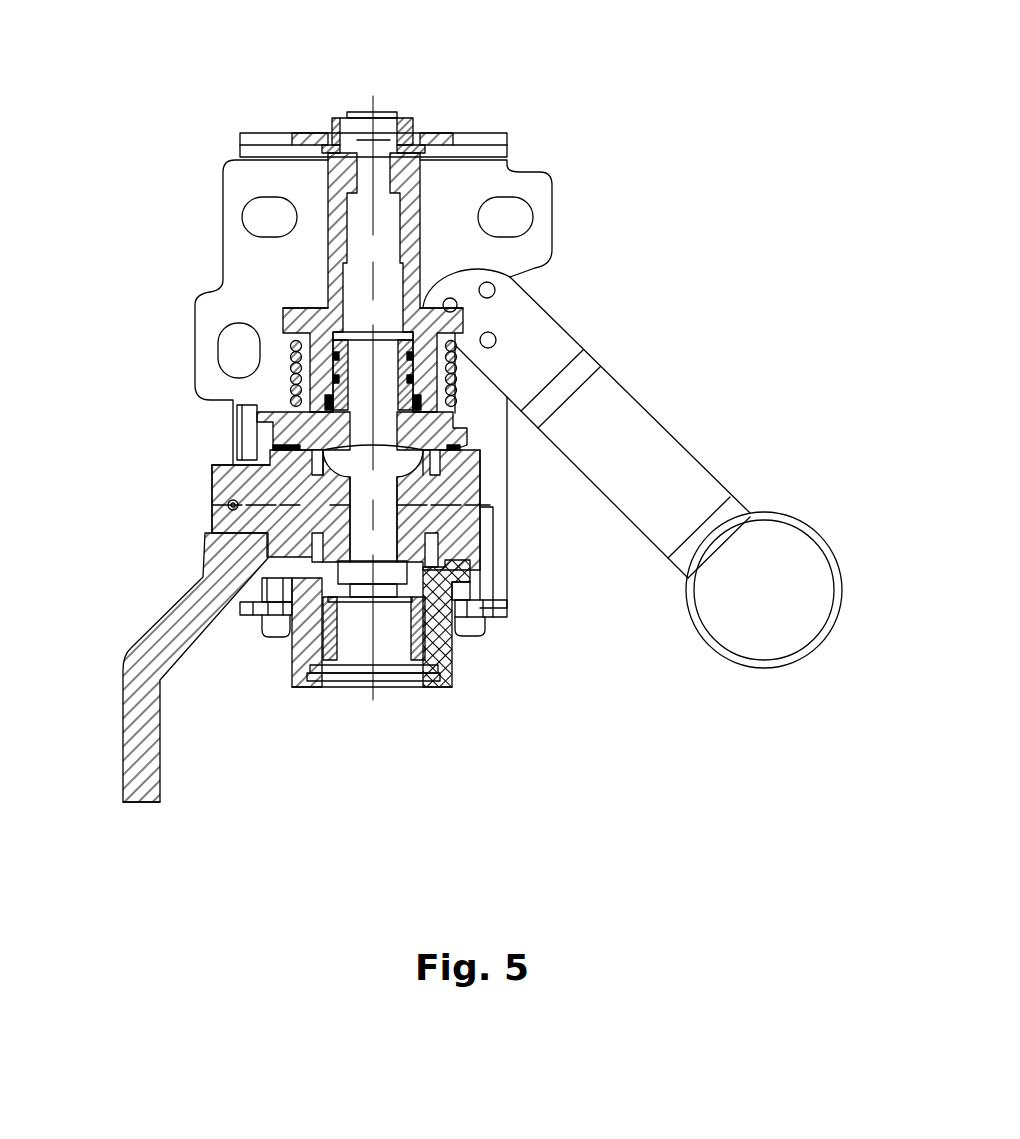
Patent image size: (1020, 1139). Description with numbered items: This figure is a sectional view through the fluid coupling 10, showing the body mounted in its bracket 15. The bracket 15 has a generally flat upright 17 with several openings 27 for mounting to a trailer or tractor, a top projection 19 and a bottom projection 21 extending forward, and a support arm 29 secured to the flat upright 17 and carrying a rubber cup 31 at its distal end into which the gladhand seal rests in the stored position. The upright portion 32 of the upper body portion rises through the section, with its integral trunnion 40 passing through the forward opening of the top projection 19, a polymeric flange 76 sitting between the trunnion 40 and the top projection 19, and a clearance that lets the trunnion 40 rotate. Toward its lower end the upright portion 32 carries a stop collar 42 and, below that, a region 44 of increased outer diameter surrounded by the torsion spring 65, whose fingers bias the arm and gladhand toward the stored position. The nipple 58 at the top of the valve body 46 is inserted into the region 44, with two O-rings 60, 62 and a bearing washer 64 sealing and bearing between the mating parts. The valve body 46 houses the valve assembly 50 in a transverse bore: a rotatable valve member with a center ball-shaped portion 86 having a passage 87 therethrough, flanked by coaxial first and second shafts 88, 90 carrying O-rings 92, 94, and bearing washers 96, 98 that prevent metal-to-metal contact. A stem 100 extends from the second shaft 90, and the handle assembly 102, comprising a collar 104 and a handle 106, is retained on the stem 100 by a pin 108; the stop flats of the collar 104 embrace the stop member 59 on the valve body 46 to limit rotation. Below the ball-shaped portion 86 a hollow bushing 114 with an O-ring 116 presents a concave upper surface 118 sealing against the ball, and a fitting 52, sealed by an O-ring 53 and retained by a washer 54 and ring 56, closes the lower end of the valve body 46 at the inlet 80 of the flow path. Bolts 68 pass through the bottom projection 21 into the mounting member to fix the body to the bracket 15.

The fluid coupling 10 is at (652, 148).
The bracket 15 is at (222, 172).
The flat upright 17 is at (232, 228).
The top projection 19 is at (277, 133).
The bottom projection 21 is at (248, 608).
The openings 27 is at (262, 192).
The support arm 29 is at (652, 432).
The rubber cup 31 is at (765, 553).
The upright portion 32 is at (405, 215).
The trunnion 40 is at (385, 110).
The stop collar 42 is at (300, 320).
The region of increased outer diameter 44 is at (294, 365).
The valve body 46 is at (303, 690).
The valve assembly 50 is at (483, 497).
The fitting 52 is at (331, 675).
The O-ring 53 is at (450, 640).
The washer 54 is at (436, 664).
The ring 56 is at (420, 672).
The nipple 58 is at (412, 350).
The stop member 59 is at (318, 408).
The O-ring 60 is at (326, 357).
The O-ring 62 is at (294, 345).
The washer 64 is at (322, 400).
The torsion spring 65 is at (328, 382).
The bolt 68 is at (275, 628).
The flange 76 is at (412, 135).
The inlet 80 is at (383, 685).
The ball-shaped portion 86 is at (440, 563).
The passage 87 is at (365, 500).
The first shaft 88 is at (460, 540).
The second shaft 90 is at (262, 470).
The O-ring 92 is at (478, 477).
The O-ring 94 is at (287, 447).
The bearing washer 96 is at (462, 443).
The bearing washer 98 is at (245, 447).
The stem 100 is at (240, 492).
The handle assembly 102 is at (210, 481).
The collar 104 is at (230, 555).
The handle 106 is at (158, 805).
The pin 108 is at (228, 507).
The bushing 114 is at (303, 650).
The O-ring 116 is at (470, 602).
The concave upper surface 118 is at (462, 586).